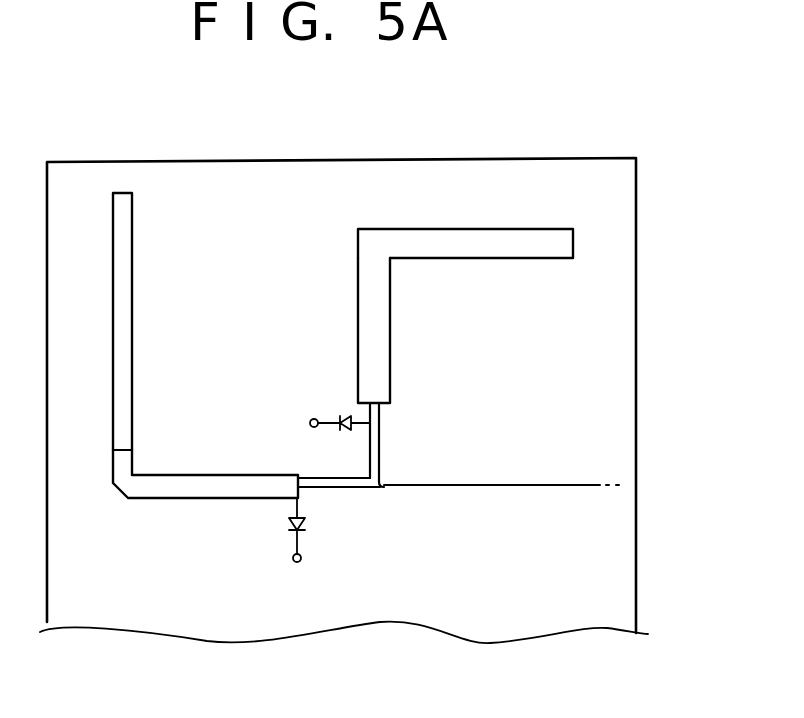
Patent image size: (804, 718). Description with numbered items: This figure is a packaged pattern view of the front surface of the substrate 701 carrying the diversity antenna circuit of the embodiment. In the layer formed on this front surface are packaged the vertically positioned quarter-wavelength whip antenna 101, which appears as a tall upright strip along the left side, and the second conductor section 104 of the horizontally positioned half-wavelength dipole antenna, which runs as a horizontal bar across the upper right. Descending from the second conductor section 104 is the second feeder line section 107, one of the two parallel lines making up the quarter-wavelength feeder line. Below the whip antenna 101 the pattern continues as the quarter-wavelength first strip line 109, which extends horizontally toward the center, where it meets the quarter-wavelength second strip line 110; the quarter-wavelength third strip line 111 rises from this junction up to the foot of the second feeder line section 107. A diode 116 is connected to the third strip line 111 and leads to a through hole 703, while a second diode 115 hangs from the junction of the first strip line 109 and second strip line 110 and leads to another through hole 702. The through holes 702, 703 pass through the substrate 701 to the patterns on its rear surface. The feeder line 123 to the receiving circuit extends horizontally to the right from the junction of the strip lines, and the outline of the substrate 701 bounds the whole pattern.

The substrate 701 is at (637, 207).
The ¼ wavelength whip antenna 101 is at (130, 322).
The ¼ wavelength first strip line 109 is at (198, 500).
The second conductor section 104 is at (487, 242).
The second feeder line section 107 is at (380, 338).
The ¼ wavelength third strip line 111 is at (381, 443).
The ¼ wavelength second strip line 110 is at (346, 490).
The feeder line 123 is at (510, 488).
The diode 116 is at (343, 412).
The through hole 703 is at (310, 423).
The diode 115 is at (288, 528).
The through hole 702 is at (301, 561).